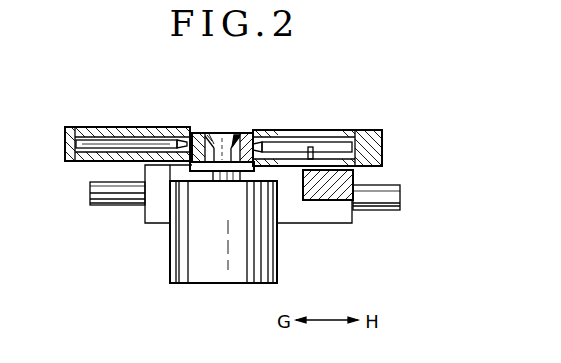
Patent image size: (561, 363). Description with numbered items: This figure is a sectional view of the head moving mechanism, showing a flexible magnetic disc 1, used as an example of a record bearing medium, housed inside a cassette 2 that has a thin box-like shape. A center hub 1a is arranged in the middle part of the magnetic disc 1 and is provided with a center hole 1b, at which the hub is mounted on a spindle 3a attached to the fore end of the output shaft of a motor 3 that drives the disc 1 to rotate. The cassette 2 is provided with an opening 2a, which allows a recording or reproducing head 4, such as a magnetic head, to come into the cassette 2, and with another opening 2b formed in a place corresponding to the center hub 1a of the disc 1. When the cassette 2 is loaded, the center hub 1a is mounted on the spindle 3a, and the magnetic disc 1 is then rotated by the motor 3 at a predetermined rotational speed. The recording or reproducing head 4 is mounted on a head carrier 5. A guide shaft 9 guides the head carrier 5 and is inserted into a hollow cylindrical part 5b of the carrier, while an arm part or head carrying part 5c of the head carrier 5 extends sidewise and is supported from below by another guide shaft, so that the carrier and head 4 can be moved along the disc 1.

The flexible magnetic disc 1 is at (136, 127).
The center hub 1a is at (252, 130).
The center hole 1b is at (205, 131).
The cassette 2 is at (78, 158).
The opening 2a is at (340, 158).
The opening 2b is at (190, 168).
The motor 3 is at (214, 273).
The spindle 3a is at (223, 132).
The recording or reproducing head 4 is at (312, 150).
The head carrier 5 is at (328, 229).
The hollow cylindrical part 5b is at (308, 224).
The arm part or head carrying part 5c is at (348, 196).
The guide shaft 9 is at (112, 202).